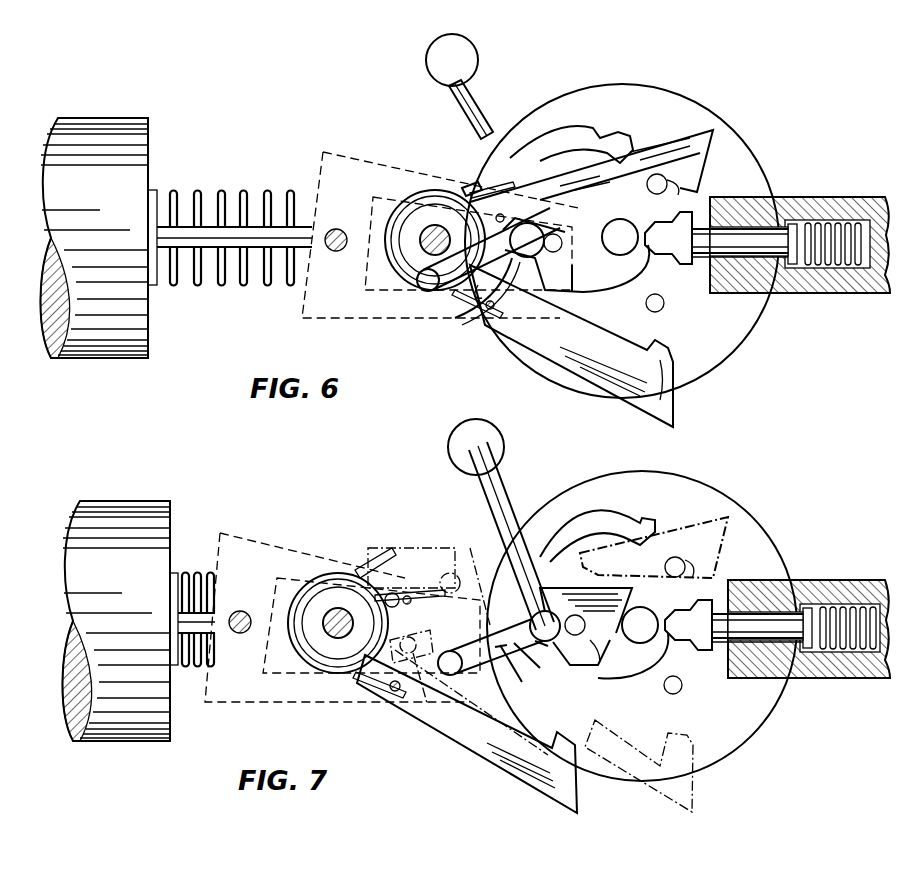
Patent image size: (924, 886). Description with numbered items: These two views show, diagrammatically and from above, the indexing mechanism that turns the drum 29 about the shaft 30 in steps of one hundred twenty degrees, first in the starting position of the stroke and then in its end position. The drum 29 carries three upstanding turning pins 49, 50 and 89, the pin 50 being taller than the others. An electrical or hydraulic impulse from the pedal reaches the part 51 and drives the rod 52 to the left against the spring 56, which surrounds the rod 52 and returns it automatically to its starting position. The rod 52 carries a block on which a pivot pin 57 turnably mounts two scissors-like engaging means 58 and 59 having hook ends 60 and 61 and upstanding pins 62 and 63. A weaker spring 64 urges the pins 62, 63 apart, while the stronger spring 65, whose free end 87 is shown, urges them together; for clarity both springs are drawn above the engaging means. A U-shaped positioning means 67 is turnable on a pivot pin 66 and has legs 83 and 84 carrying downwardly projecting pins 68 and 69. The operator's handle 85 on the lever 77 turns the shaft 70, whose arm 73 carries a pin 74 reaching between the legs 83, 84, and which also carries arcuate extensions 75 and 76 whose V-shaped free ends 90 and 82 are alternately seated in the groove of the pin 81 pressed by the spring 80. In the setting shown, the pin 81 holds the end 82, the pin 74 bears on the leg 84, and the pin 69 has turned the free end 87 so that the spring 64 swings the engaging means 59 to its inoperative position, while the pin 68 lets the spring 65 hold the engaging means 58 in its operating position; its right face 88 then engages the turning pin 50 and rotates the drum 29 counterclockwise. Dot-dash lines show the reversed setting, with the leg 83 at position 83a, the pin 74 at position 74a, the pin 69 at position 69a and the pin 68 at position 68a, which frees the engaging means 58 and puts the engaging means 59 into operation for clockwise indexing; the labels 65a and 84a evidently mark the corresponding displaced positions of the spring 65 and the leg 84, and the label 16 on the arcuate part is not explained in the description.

In FIG. 6, the arcuate guide surface 16 is at (596, 309).
In FIG. 6, the drum 29 is at (680, 84).
In FIG. 7, the drum 29 is at (782, 566).
In FIG. 6, the shaft 30 is at (619, 222).
In FIG. 7, the shaft 30 is at (642, 606).
In FIG. 6, the turning pin 49 is at (655, 312).
In FIG. 7, the turning pin 49 is at (676, 578).
In FIG. 6, the turning pin 50 is at (655, 195).
In FIG. 7, the turning pin 50 is at (574, 636).
In FIG. 6, the part 51 is at (112, 136).
In FIG. 7, the part 51 is at (116, 608).
In FIG. 6, the rod 52 is at (258, 228).
In FIG. 7, the rod 52 is at (192, 612).
In FIG. 6, the spring 56 is at (197, 196).
In FIG. 7, the spring 56 is at (176, 666).
In FIG. 6, the pivot pin 57 is at (425, 250).
In FIG. 7, the pivot pin 57 is at (328, 632).
In FIG. 6, the engaging means 58 is at (545, 232).
In FIG. 7, the engaging means 58 is at (535, 624).
In FIG. 6, the engaging means 59 is at (555, 355).
In FIG. 7, the engaging means 59 is at (505, 752).
In FIG. 6, the hook end 60 is at (680, 196).
In FIG. 7, the hook end 60 is at (610, 648).
In FIG. 6, the hook end 61 is at (674, 390).
In FIG. 7, the hook end 61 is at (578, 786).
In FIG. 6, the pin 62 is at (468, 187).
In FIG. 7, the pin 62 is at (398, 594).
In FIG. 6, the pin 63 is at (452, 305).
In FIG. 7, the pin 63 is at (350, 684).
In FIG. 6, the spring 64 is at (392, 242).
In FIG. 7, the spring 64 is at (300, 610).
In FIG. 6, the second spring 65 is at (400, 255).
In FIG. 7, the second spring 65 is at (428, 585).
In FIG. 7, the inner ring (alternate position) 65a is at (392, 560).
In FIG. 6, the pivot pin 66 is at (336, 228).
In FIG. 7, the pivot pin 66 is at (238, 634).
In FIG. 6, the positioning means 67 is at (324, 155).
In FIG. 7, the positioning means 67 is at (222, 536).
In FIG. 6, the pin 68 is at (510, 214).
In FIG. 7, the pin 68 is at (413, 600).
In FIG. 7, the position of pin 68a is at (400, 548).
In FIG. 6, the pin 69 is at (485, 312).
In FIG. 7, the pin 69 is at (390, 694).
In FIG. 7, the position of pin 69a is at (430, 688).
In FIG. 6, the shaft 70 is at (520, 258).
In FIG. 7, the shaft 70 is at (566, 598).
In FIG. 6, the arm 73 is at (512, 300).
In FIG. 7, the arm 73 is at (540, 672).
In FIG. 6, the pin 74 is at (418, 288).
In FIG. 7, the pin 74 is at (462, 670).
In FIG. 7, the position of pin 74a is at (472, 560).
In FIG. 6, the arcuate extension 75 is at (588, 145).
In FIG. 7, the arcuate extension 75 is at (572, 545).
In FIG. 6, the arcuate extension 76 is at (588, 302).
In FIG. 7, the arcuate extension 76 is at (672, 652).
In FIG. 6, the lever 77 is at (470, 112).
In FIG. 7, the lever 77 is at (505, 482).
In FIG. 6, the spring 80 is at (830, 222).
In FIG. 7, the spring 80 is at (862, 652).
In FIG. 6, the pin 81 is at (760, 232).
In FIG. 7, the pin 81 is at (790, 640).
In FIG. 6, the free end portion 82 is at (660, 250).
In FIG. 7, the free end portion 82 is at (700, 650).
In FIG. 6, the leg 83 is at (392, 190).
In FIG. 7, the leg 83 is at (293, 572).
In FIG. 7, the position of leg 83a is at (368, 552).
In FIG. 6, the leg 84 is at (398, 314).
In FIG. 7, the leg 84 is at (272, 700).
In FIG. 7, the slide edge (alternate position) 84a is at (505, 720).
In FIG. 6, the handle 85 is at (432, 70).
In FIG. 7, the handle 85 is at (498, 456).
In FIG. 6, the free end 87 is at (476, 300).
In FIG. 6, the right face 88 is at (700, 162).
In FIG. 7, the right face 88 is at (608, 665).
In FIG. 6, the turning pin 89 is at (555, 252).
In FIG. 7, the turning pin 89 is at (680, 692).
In FIG. 7, the free end portion 90 is at (645, 522).